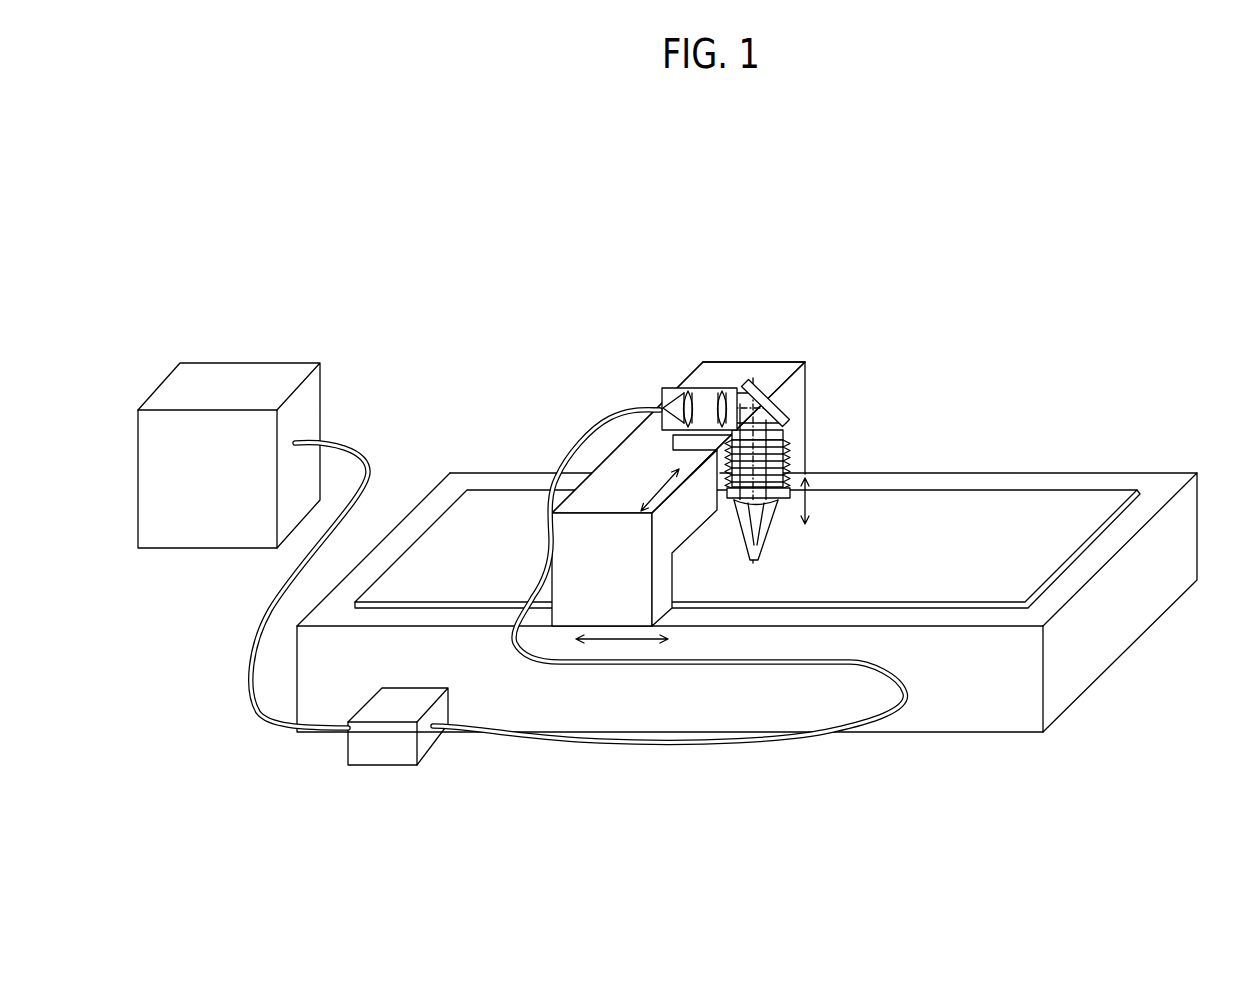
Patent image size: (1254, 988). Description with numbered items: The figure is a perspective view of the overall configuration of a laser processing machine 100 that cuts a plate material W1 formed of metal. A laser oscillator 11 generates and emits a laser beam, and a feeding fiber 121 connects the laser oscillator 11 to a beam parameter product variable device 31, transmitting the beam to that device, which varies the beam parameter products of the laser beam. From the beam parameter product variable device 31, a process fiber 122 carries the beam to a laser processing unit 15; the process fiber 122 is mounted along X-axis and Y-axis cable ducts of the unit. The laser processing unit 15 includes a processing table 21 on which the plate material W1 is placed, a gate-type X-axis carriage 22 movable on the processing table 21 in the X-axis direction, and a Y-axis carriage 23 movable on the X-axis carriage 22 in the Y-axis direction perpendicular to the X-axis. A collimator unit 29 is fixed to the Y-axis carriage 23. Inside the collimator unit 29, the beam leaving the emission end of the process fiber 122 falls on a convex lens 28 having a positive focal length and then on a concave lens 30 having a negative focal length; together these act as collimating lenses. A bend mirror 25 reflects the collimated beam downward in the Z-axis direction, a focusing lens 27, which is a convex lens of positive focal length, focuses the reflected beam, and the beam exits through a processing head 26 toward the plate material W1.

The laser processing machine 100 is at (757, 248).
The laser oscillator 11 is at (237, 375).
The feeding fiber 121 is at (258, 682).
The beam parameter product variable device 31 is at (380, 766).
The process fiber 122 is at (540, 735).
The collimator unit 29 is at (660, 408).
The convex lens 28 is at (690, 390).
The concave lens 30 is at (721, 390).
The bend mirror 25 is at (757, 378).
The X-axis carriage 22 is at (812, 392).
The Y-axis carriage 23 is at (716, 507).
The processing head 26 is at (778, 543).
The focusing lens 27 is at (753, 561).
The laser processing unit 15 is at (893, 472).
The processing table 21 is at (1046, 483).
The plate material W1 is at (950, 505).